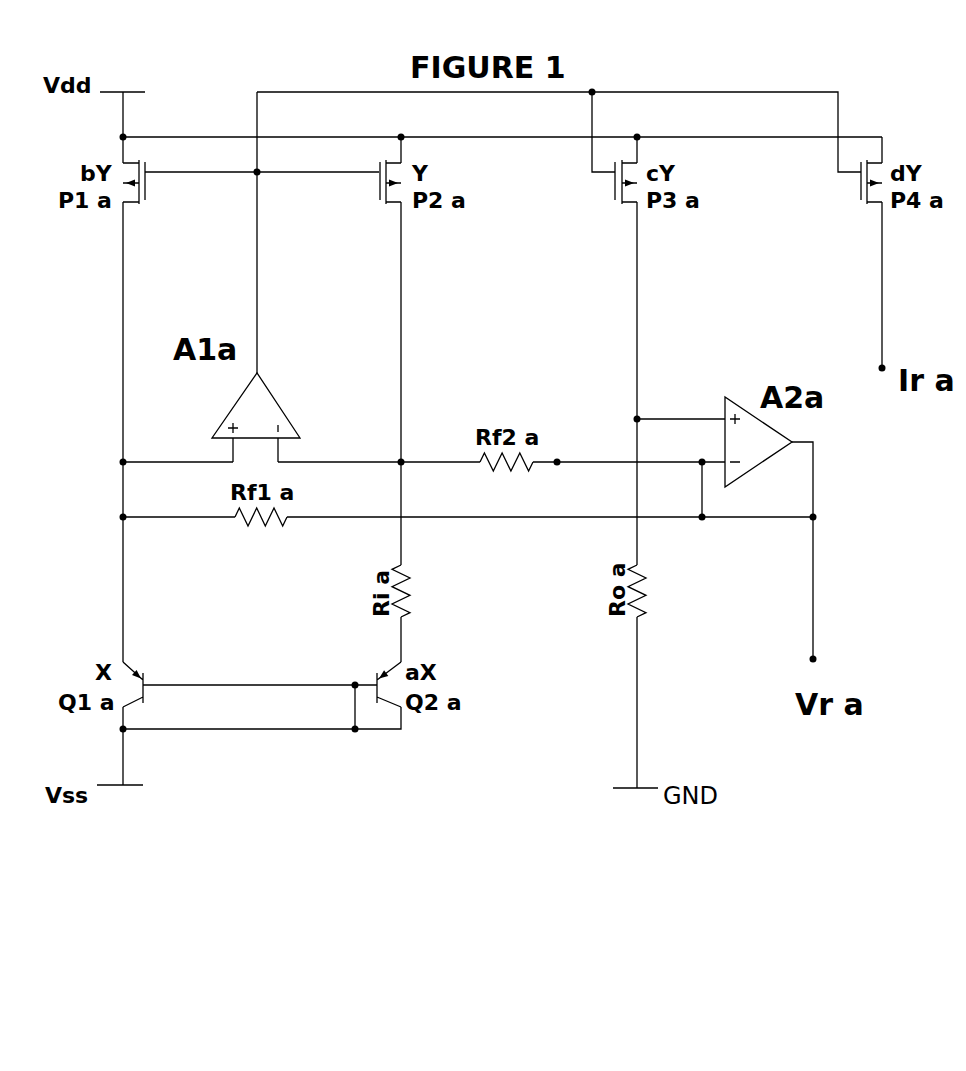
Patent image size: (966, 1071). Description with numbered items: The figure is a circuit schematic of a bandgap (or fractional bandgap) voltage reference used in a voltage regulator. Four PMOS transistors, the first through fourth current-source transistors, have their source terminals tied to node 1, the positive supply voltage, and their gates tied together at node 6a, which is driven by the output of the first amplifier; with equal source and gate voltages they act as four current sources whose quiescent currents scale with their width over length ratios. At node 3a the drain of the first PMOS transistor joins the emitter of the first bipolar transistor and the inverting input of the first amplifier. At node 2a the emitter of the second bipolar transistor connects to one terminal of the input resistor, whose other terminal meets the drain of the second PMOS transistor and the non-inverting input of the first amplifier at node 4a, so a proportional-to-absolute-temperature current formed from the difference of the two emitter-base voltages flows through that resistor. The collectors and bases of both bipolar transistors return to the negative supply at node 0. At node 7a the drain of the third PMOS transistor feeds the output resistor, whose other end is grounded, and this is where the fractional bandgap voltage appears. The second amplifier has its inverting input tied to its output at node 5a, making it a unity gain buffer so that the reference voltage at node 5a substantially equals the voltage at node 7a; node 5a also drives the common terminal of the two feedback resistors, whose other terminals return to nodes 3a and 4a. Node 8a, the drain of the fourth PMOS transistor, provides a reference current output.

The node 1 is at (487, 144).
The node 6a is at (503, 231).
The node 3a is at (177, 449).
The node 4a is at (379, 449).
The node 7a is at (655, 405).
The node 5a is at (552, 552).
The node 8a is at (859, 287).
The node 2a is at (422, 639).
The node 0 is at (247, 746).